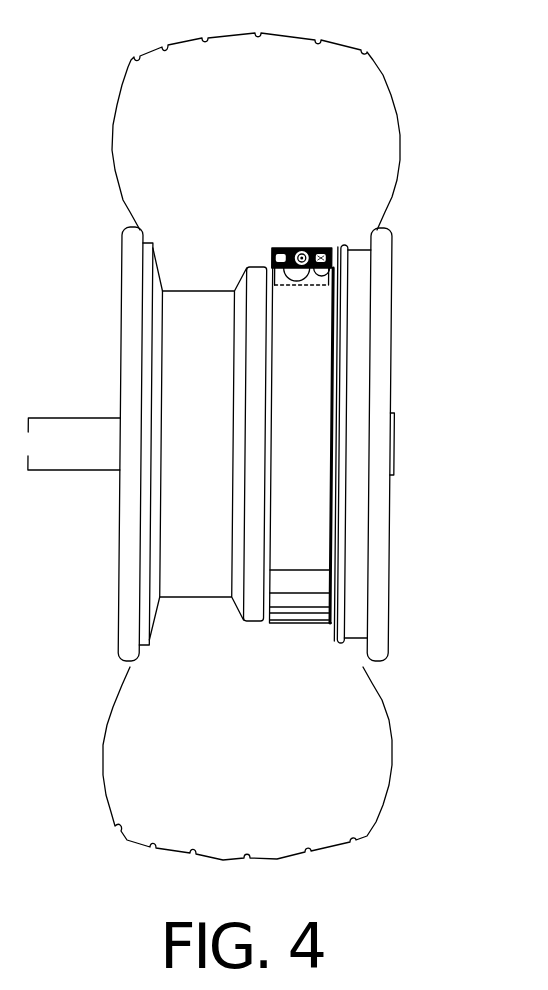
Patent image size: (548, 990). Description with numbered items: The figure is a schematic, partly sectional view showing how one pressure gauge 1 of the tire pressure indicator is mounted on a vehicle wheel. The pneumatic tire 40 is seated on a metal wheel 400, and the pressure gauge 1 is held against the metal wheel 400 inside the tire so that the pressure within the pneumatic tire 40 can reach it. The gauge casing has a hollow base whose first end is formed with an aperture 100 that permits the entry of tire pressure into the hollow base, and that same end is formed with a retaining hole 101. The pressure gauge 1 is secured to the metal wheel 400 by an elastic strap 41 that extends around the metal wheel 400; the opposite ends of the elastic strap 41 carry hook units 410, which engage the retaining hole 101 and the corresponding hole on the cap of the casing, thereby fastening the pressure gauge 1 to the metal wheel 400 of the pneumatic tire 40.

The pressure gauge 1 is at (262, 257).
The pneumatic tire 40 is at (363, 46).
The metal wheel 400 is at (367, 297).
The hook units 410 is at (293, 275).
The elastic strap 41 is at (313, 553).
The aperture 100 is at (298, 247).
The retaining hole 101 is at (323, 248).